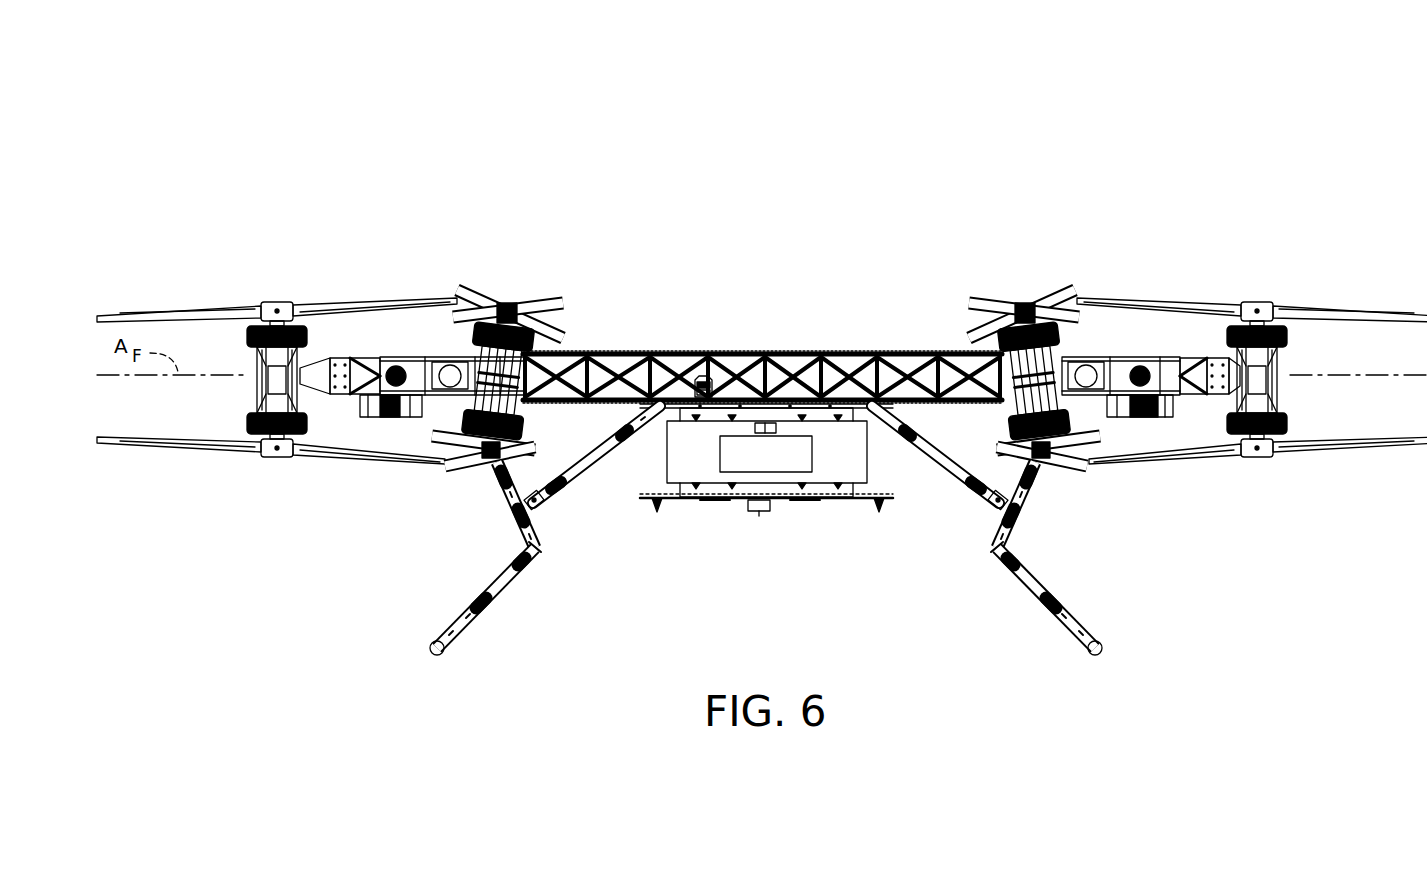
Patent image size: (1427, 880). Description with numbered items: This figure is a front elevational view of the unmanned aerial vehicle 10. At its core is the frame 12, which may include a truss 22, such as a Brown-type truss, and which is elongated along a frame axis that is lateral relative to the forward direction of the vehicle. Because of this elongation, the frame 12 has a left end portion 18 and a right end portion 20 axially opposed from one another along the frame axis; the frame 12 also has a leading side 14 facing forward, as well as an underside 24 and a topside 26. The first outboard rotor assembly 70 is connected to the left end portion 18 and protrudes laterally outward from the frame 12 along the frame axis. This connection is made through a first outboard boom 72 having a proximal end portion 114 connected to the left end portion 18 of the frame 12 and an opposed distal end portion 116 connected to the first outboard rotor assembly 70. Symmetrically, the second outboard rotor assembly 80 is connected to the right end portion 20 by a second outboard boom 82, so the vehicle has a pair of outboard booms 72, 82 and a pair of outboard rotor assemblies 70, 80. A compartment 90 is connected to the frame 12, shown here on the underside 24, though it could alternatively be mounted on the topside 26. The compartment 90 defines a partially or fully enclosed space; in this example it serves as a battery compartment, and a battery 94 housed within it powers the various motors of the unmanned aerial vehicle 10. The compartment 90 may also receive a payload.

The unmanned aerial vehicle 10 is at (762, 361).
The frame 12 is at (622, 347).
The leading side 14 is at (545, 530).
The left end portion 18 is at (1034, 319).
The right end portion 20 is at (578, 345).
The truss 22 is at (930, 357).
The underside 24 is at (570, 406).
The topside 26 is at (680, 347).
The first outboard rotor assembly 70 is at (1252, 318).
The first outboard boom 72 is at (1160, 360).
The second outboard rotor assembly 80 is at (277, 319).
The second outboard boom 82 is at (412, 370).
The compartment 90 is at (808, 500).
The battery 94 is at (747, 473).
The proximal end portion 114 is at (1121, 324).
The distal end portion 116 is at (1218, 318).